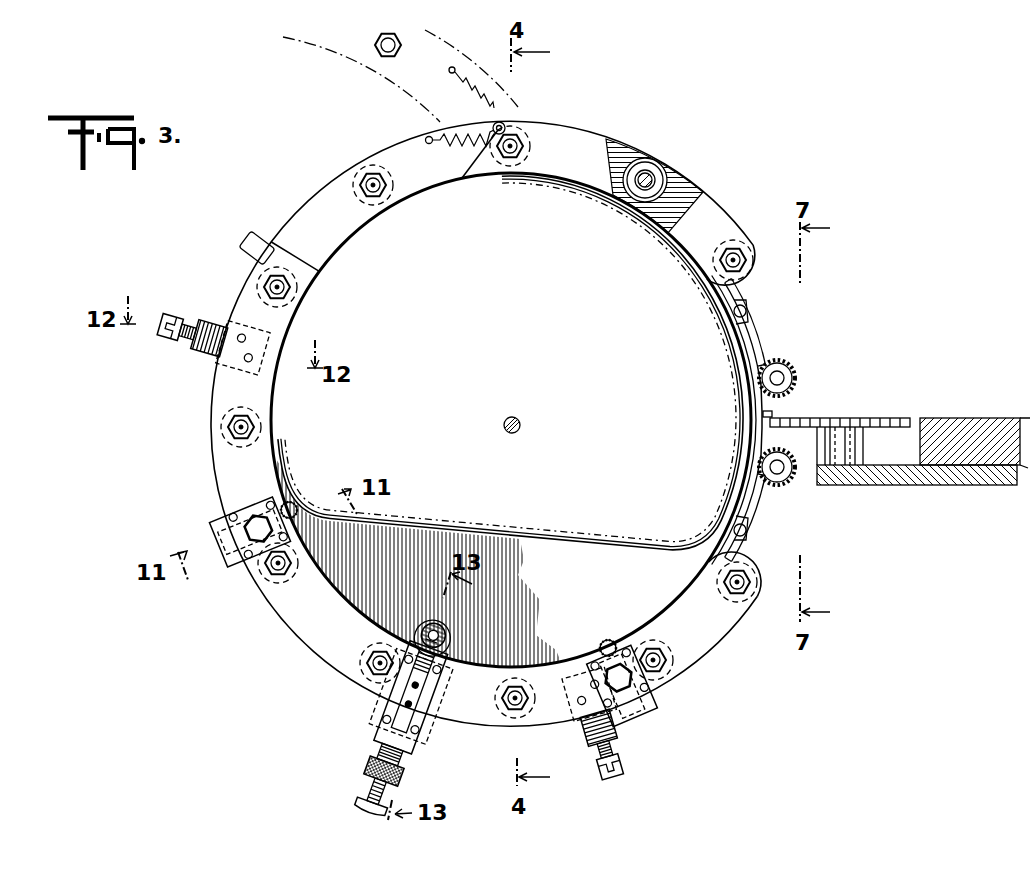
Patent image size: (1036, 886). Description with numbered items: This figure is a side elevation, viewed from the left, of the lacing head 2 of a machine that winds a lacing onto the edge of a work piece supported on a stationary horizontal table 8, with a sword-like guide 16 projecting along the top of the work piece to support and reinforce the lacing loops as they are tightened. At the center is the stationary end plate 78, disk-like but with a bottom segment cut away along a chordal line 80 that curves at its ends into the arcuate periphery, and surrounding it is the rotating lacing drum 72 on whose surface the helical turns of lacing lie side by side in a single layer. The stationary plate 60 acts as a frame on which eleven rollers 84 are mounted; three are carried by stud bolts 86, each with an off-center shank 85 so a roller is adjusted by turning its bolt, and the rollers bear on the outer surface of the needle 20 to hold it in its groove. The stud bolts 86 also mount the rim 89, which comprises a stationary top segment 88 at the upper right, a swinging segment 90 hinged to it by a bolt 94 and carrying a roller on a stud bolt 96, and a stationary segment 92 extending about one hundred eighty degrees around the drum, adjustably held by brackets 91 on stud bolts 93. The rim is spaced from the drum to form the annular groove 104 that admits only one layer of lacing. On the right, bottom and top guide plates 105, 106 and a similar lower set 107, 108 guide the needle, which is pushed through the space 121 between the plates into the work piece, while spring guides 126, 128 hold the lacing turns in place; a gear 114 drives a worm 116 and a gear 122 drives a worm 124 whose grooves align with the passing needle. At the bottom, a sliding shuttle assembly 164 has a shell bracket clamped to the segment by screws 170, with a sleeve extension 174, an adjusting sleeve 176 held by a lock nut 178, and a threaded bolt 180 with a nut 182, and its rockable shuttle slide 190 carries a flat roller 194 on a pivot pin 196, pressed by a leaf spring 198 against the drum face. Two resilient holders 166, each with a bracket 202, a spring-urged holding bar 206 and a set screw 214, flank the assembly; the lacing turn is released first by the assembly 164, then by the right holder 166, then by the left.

The lacing head 2 is at (237, 696).
The stationary horizontal table 8 is at (982, 432).
The reinforcing sword-like guide 16 is at (774, 414).
The needle 20 is at (486, 423).
The stationary plate 60 is at (612, 136).
The rotating lacing drum 72 is at (626, 574).
The stationary end plate 78 is at (510, 363).
The chordal line 80 is at (548, 548).
The rollers 84 is at (385, 162).
The off-center shank 85 is at (656, 186).
The stud bolts 86 is at (645, 170).
The stationary top segment 88 is at (705, 217).
The rim 89 is at (199, 461).
The swinging segment 90 is at (332, 50).
The brackets 91 is at (211, 322).
The stationary segment 92 is at (288, 620).
The stud bolts 93 is at (166, 347).
The bolt 94 is at (503, 124).
The stud bolt 96 is at (380, 190).
The annular groove 104 is at (332, 254).
The bottom guide plate 105 is at (752, 356).
The top guide plate 106 is at (766, 346).
The guide plate 107 is at (736, 494).
The guide plate 108 is at (760, 506).
The gear 114 is at (786, 366).
The helical worm 116 is at (793, 379).
The space 121 is at (740, 327).
The gear 122 is at (790, 486).
The worm 124 is at (792, 476).
The spring guide 126 is at (748, 310).
The spring guide 128 is at (748, 536).
The sliding shuttle assembly 164 is at (403, 704).
The resilient holders 166 is at (200, 535).
The screws 170 is at (412, 694).
The internally threaded sleeve extension 174 is at (411, 697).
The adjusting sleeve 176 is at (384, 771).
The lock nut 178 is at (390, 754).
The threaded bolt 180 is at (371, 807).
The nut 182 is at (376, 791).
The rockable shuttle slide 190 is at (432, 638).
The flat roller 194 is at (433, 636).
The pivot pin 196 is at (433, 635).
The leaf spring 198 is at (411, 697).
The bracket 202 is at (212, 513).
The holding bar 206 is at (296, 520).
The set screw 214 is at (256, 515).